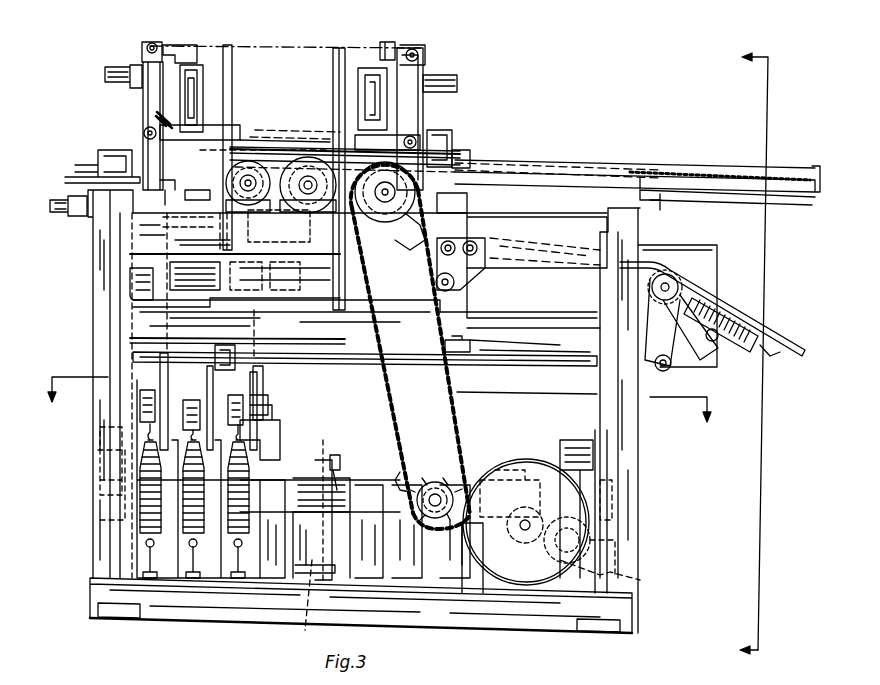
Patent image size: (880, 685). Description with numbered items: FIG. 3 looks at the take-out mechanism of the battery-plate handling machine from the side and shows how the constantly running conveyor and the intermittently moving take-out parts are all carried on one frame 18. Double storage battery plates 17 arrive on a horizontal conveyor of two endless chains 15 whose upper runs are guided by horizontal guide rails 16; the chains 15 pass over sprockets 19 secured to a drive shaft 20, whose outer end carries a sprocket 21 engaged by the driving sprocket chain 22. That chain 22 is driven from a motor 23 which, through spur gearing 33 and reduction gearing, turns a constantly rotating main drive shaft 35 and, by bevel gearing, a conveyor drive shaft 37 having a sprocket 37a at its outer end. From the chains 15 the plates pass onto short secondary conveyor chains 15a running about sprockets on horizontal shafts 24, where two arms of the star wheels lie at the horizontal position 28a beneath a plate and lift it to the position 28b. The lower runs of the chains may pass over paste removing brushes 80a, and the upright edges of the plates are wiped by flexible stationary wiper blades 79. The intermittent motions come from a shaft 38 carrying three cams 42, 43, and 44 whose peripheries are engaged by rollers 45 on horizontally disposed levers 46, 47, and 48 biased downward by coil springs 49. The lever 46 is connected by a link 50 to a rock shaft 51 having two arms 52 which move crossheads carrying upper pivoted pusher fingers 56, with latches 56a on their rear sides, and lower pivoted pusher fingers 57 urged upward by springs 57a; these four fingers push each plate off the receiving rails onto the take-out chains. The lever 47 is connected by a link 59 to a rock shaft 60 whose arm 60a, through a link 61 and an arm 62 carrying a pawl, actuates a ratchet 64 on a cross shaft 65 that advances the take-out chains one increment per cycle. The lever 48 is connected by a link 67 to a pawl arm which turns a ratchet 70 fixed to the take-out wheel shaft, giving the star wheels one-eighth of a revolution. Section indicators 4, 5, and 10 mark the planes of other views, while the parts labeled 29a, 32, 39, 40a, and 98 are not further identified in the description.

The section line 4- 4 is at (376, 410).
The section line 5- 5 is at (740, 357).
The base plate 10 is at (302, 445).
The conveyor chains 15 is at (818, 168).
The short secondary conveyor chains 15a is at (315, 148).
The horizontal guide rails 16 is at (790, 200).
The double storage battery plates 17 is at (330, 47).
The frame 18 is at (640, 455).
The sprockets 19 is at (388, 225).
The drive shaft 20 is at (521, 272).
The sprocket 21 is at (310, 205).
The driving sprocket chain 22 is at (470, 410).
The motor 23 is at (530, 460).
The horizontal shafts 24 is at (255, 205).
The horizontal arm position 28a is at (232, 104).
The raised arm position 28b is at (232, 78).
The slide 29a is at (250, 140).
The rail 32 is at (292, 140).
The spur gearing 33 is at (640, 582).
The main drive shaft 35 is at (495, 455).
The conveyor drive shaft 37 is at (436, 472).
The sprocket 37a is at (400, 472).
The shaft 38 is at (98, 512).
The lever 39 is at (338, 455).
The shaft 40a is at (300, 625).
The cam 42 is at (215, 560).
The cam 43 is at (205, 548).
The cam 44 is at (170, 550).
The rollers 45 is at (282, 425).
The lever 46 is at (265, 388).
The lever 47 is at (205, 398).
The lever 48 is at (157, 380).
The coil springs 49 is at (140, 470).
The link 50 is at (262, 330).
The rock shaft 51 is at (180, 278).
The arms 52 is at (138, 90).
The upper pivoted pusher finger 56 is at (165, 42).
The latches 56a is at (428, 62).
The lower pivoted pusher finger 57 is at (143, 135).
The spring 57a is at (422, 138).
The link 59 is at (235, 375).
The rock shaft 60 is at (345, 366).
The arm 60a is at (445, 395).
The link 61 is at (440, 330).
The arm 62 is at (500, 167).
The ratchet 64 is at (455, 145).
The cross shaft 65 is at (98, 162).
The link 67 is at (170, 340).
The ratchet 70 is at (205, 196).
The flexible stationary wiper blades 79 is at (203, 112).
The paste removing brushes 80a is at (768, 352).
The shaft end 98 is at (72, 214).